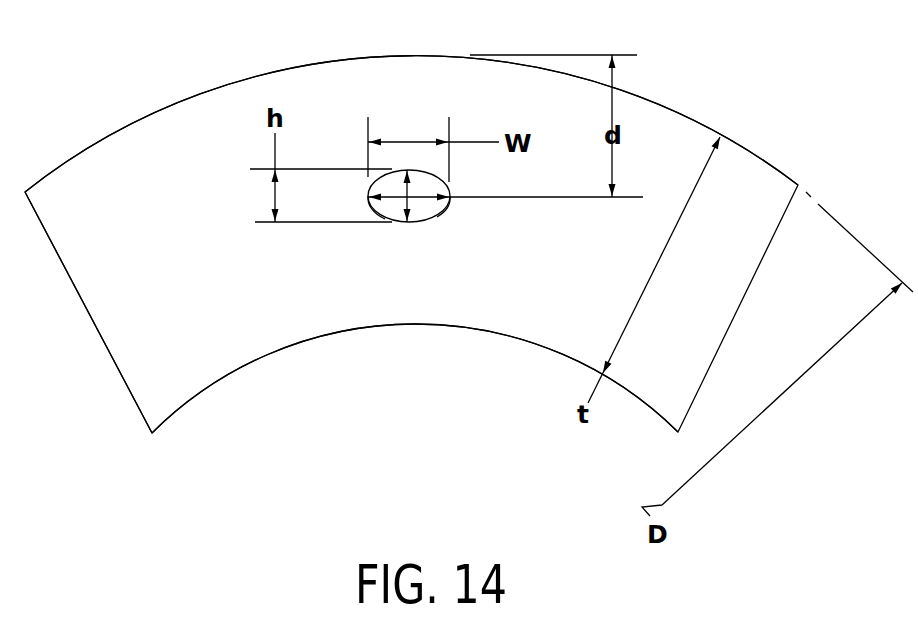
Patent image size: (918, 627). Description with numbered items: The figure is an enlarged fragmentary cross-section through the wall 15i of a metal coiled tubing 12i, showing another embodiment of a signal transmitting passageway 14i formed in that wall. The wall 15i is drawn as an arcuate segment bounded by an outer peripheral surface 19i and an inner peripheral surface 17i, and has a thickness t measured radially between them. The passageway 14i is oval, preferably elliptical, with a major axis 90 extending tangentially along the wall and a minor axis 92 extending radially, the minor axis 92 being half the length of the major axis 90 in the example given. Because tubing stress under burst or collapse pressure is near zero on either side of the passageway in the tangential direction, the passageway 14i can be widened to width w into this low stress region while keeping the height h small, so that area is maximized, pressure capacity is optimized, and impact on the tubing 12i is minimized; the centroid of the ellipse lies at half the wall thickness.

The metal coiled tubing 12i is at (134, 113).
The outer peripheral surface 19i is at (183, 97).
The inner peripheral surface 17i is at (365, 328).
The wall 15i is at (182, 367).
The passageway 14i is at (420, 223).
The major axis 90 is at (375, 223).
The minor axis 92 is at (453, 214).